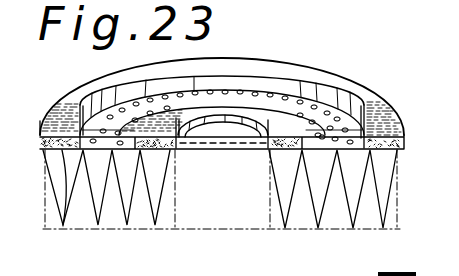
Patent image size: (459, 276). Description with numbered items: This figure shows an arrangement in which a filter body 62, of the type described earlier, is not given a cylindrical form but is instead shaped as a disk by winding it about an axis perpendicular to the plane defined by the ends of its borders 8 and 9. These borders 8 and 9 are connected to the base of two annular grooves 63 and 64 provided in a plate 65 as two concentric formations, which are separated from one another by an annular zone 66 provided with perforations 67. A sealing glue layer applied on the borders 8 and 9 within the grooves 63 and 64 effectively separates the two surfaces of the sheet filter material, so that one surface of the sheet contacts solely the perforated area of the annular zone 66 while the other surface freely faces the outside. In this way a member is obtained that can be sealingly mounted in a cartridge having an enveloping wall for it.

The border 8 is at (52, 223).
The border 9 is at (156, 148).
The filter body 62 is at (143, 228).
The annular groove 63 is at (307, 114).
The annular groove 64 is at (403, 148).
The plate 65 is at (399, 152).
The annular zone 66 is at (362, 104).
The perforations 67 is at (328, 127).